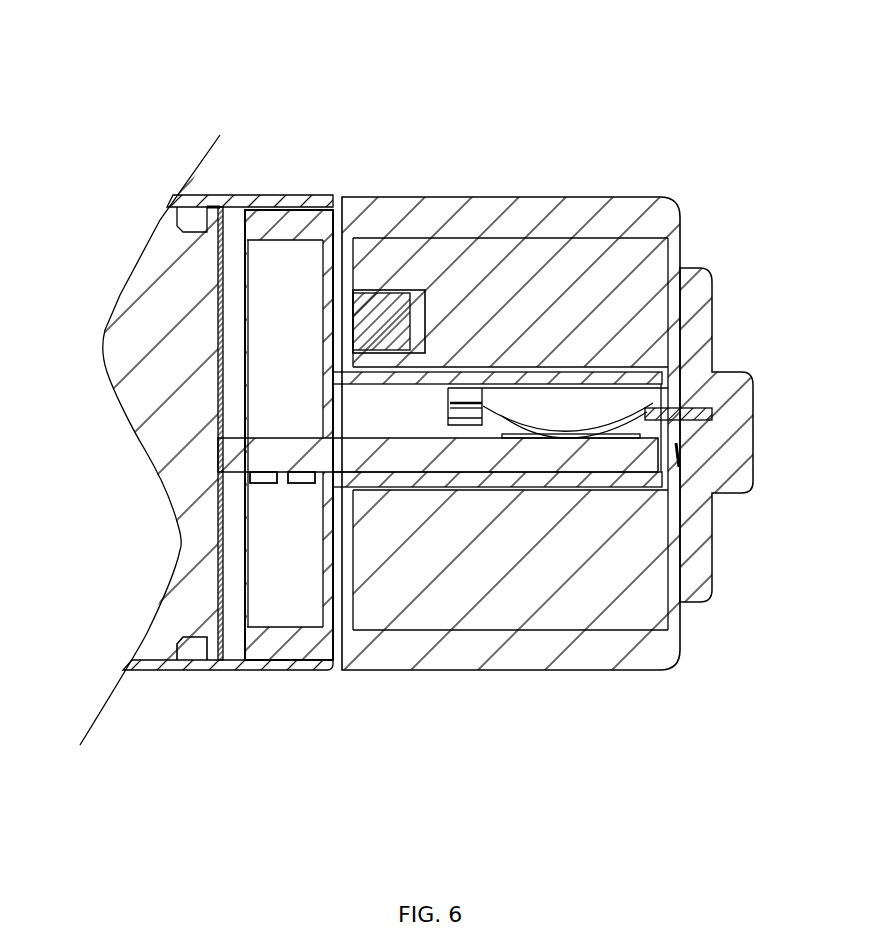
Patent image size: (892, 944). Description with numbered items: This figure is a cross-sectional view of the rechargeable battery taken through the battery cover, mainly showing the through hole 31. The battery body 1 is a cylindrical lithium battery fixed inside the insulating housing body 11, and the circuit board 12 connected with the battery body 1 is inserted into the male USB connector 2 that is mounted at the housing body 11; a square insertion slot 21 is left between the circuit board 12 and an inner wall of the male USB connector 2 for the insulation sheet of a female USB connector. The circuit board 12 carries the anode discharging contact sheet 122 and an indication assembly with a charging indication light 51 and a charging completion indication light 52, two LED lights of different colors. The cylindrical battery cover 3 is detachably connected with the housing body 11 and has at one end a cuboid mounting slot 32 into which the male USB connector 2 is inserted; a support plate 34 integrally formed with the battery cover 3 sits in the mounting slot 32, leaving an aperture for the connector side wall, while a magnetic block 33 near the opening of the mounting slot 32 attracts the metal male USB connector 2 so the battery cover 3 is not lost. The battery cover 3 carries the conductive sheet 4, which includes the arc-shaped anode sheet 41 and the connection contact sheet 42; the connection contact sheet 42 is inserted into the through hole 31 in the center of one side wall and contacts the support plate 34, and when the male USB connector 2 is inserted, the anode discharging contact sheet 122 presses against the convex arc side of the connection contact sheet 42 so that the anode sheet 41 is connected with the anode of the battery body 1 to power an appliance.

The battery body 1 is at (178, 613).
The housing body 11 is at (200, 632).
The charging indication light 51 is at (300, 465).
The charging completion indication light 52 is at (262, 478).
The male USB connector 2 is at (352, 484).
The battery cover 3 is at (404, 215).
The magnetic block 33 is at (373, 322).
The insertion slot 21 is at (382, 410).
The mounting slot 32 is at (413, 490).
The circuit board 12 is at (467, 455).
The anode discharging contact sheet 122 is at (550, 425).
The support plate 34 is at (500, 398).
The connection contact sheet 42 is at (582, 425).
The conductive sheet 4 is at (717, 304).
The anode sheet 41 is at (712, 290).
The through hole 31 is at (676, 446).